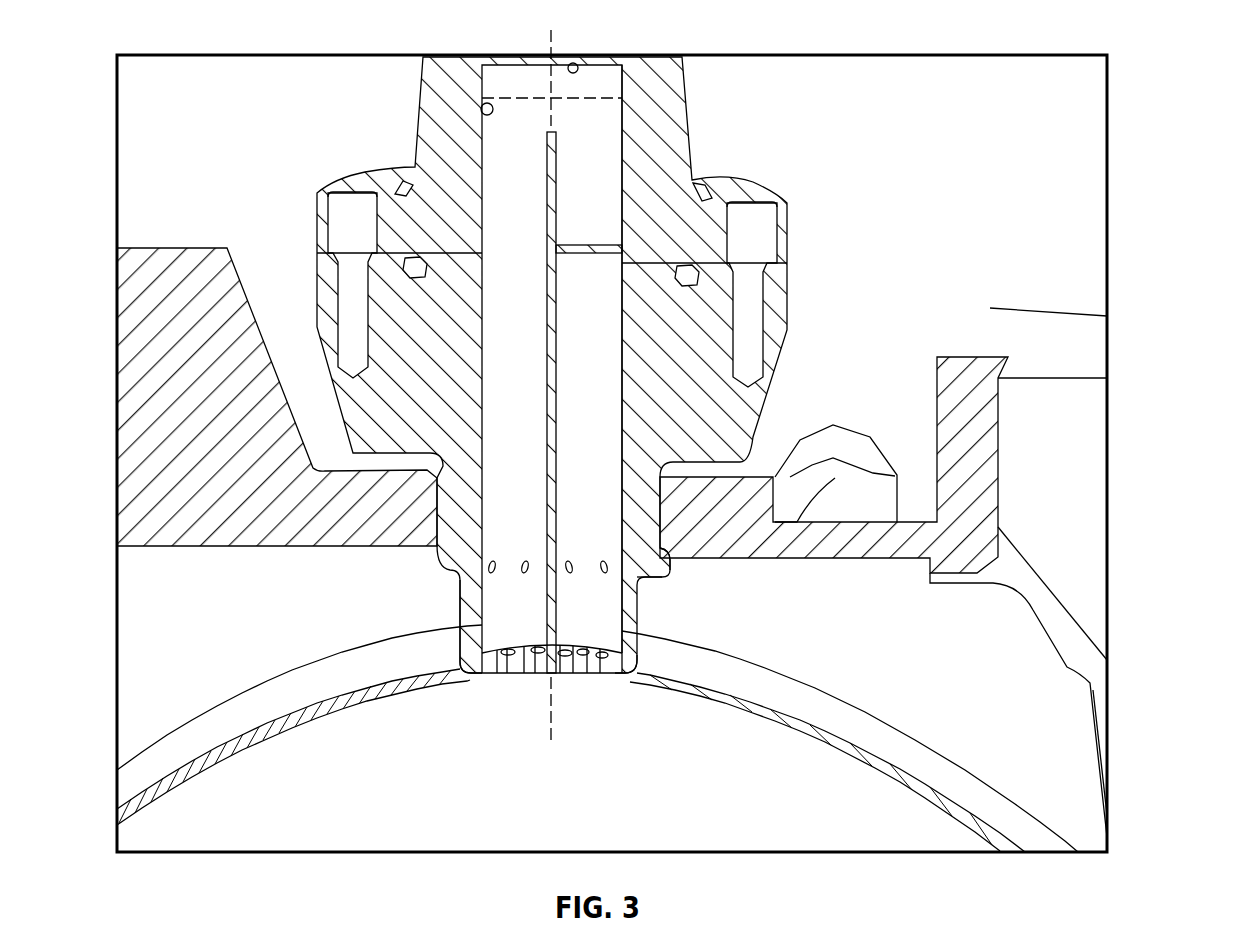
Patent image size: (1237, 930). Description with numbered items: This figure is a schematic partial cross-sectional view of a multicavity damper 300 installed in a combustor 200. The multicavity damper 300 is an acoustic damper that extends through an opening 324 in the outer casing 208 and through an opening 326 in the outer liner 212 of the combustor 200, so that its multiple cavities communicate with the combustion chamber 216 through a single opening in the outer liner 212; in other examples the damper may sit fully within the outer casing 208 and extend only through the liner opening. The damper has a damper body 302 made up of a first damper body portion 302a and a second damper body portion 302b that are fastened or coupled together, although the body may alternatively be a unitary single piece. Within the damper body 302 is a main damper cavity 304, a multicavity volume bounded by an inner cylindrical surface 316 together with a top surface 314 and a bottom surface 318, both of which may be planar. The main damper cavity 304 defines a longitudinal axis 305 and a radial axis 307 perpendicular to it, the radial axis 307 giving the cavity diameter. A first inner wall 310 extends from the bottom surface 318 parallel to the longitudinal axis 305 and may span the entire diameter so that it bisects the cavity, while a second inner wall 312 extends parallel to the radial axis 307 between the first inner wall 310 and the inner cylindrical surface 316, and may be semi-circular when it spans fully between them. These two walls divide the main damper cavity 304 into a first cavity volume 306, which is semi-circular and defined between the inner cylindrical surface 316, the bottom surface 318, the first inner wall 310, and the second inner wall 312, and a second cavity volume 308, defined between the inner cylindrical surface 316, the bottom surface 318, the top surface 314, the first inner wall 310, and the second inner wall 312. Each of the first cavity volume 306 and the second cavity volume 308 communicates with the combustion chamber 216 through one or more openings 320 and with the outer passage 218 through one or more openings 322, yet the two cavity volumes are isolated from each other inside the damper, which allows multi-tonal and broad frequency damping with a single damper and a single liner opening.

The combustor 200 is at (975, 760).
The outer casing 208 is at (140, 308).
The outer liner 212 is at (827, 712).
The combustion chamber 216 is at (392, 812).
The outer passage 218 is at (987, 649).
The multicavity damper 300 is at (664, 38).
The damper body 302 is at (657, 365).
The first damper body portion 302a is at (672, 173).
The second damper body portion 302b is at (717, 402).
The main damper cavity 304 is at (645, 428).
The longitudinal axis 305 is at (556, 117).
The first cavity volume 306 is at (600, 633).
The radial axis 307 is at (536, 98).
The second cavity volume 308 is at (500, 627).
The first inner wall 310 is at (558, 153).
The second inner wall 312 is at (580, 240).
The top surface 314 is at (574, 63).
The inner cylindrical surface 316 is at (485, 114).
The bottom surface 318 is at (533, 654).
The openings 320 is at (603, 657).
The openings 322 is at (604, 561).
The opening 324 is at (676, 565).
The opening 326 is at (619, 692).